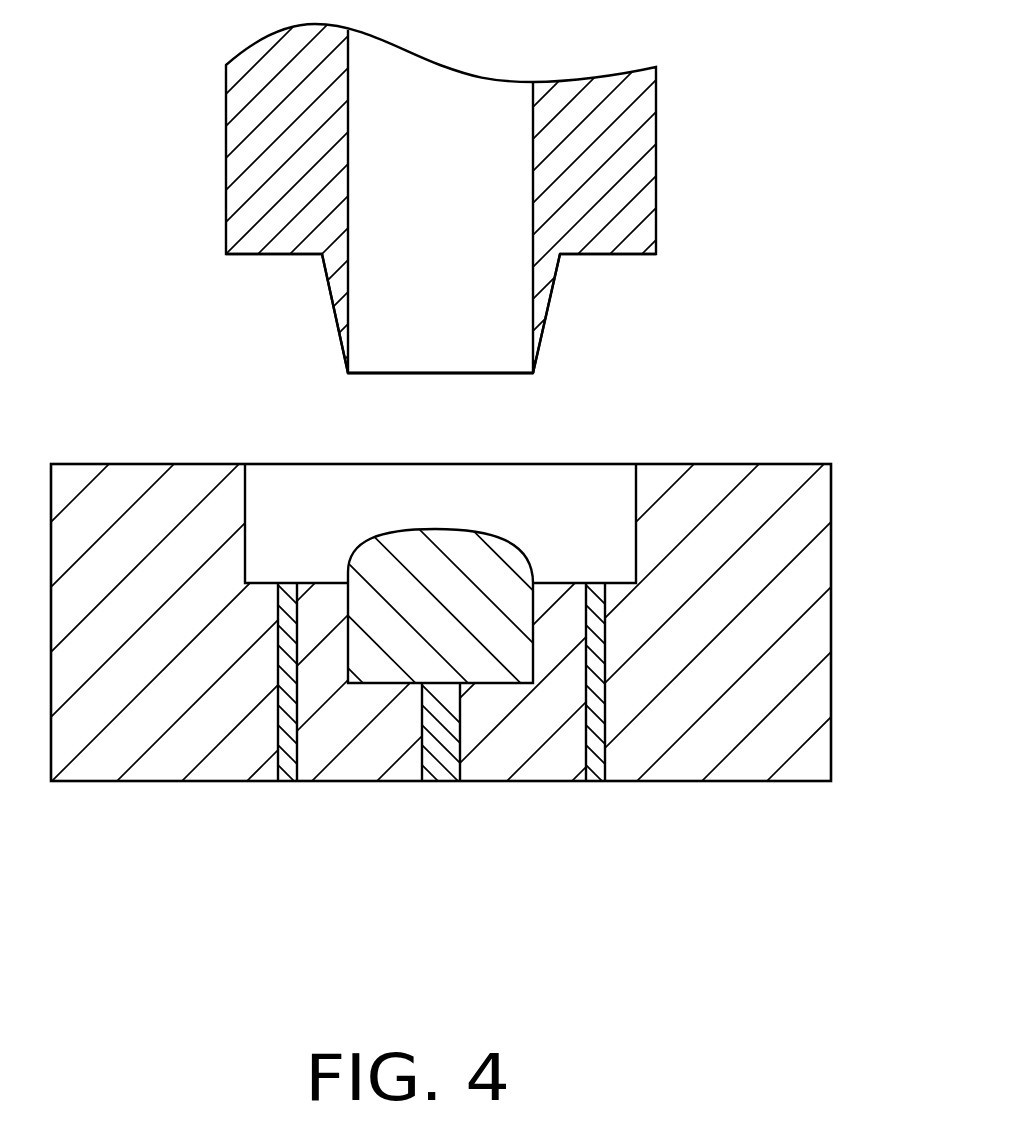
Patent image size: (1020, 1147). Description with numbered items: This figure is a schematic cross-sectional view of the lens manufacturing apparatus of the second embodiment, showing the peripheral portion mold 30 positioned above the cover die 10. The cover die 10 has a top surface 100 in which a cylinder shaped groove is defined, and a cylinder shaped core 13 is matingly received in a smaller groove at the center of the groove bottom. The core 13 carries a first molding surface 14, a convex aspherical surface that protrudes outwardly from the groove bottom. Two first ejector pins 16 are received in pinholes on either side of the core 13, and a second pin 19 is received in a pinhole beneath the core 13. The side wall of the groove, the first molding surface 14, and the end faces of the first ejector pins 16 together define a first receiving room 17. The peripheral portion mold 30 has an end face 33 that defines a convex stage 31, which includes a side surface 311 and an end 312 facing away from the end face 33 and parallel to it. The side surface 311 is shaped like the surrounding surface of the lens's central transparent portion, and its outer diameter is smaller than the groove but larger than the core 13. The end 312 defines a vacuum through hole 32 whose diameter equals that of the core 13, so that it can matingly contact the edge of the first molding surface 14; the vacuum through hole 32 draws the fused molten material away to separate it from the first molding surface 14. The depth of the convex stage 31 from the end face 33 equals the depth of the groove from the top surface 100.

The top surface 100 is at (730, 464).
The cover die 10 is at (802, 653).
The core 13 is at (483, 659).
The first molding surface 14 is at (467, 530).
The first ejector pins 16 is at (289, 758).
The first receiving room 17 is at (592, 545).
The second pin 19 is at (440, 757).
The peripheral portion mold 30 is at (632, 155).
The convex stage 31 is at (547, 303).
The side surface 311 is at (542, 343).
The end 312 is at (395, 373).
The vacuum through hole 32 is at (472, 243).
The end face 33 is at (630, 257).